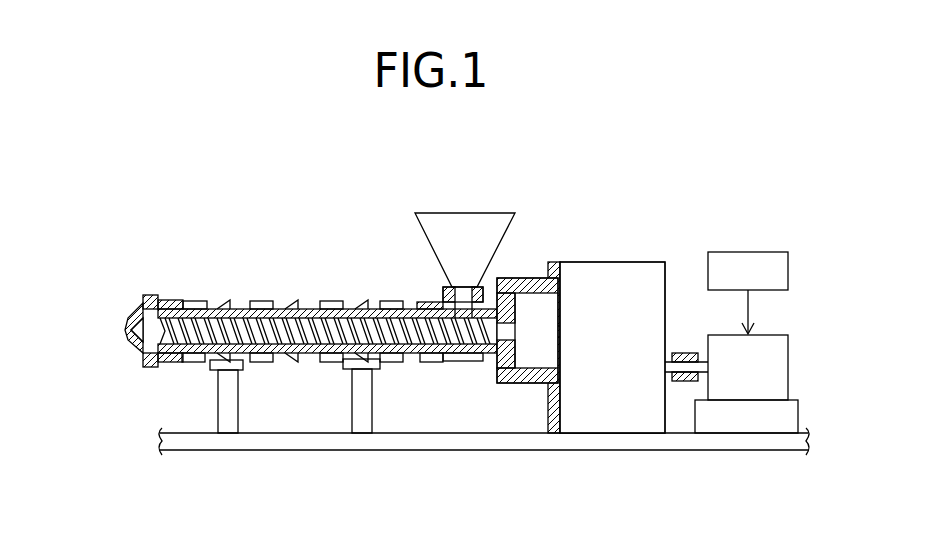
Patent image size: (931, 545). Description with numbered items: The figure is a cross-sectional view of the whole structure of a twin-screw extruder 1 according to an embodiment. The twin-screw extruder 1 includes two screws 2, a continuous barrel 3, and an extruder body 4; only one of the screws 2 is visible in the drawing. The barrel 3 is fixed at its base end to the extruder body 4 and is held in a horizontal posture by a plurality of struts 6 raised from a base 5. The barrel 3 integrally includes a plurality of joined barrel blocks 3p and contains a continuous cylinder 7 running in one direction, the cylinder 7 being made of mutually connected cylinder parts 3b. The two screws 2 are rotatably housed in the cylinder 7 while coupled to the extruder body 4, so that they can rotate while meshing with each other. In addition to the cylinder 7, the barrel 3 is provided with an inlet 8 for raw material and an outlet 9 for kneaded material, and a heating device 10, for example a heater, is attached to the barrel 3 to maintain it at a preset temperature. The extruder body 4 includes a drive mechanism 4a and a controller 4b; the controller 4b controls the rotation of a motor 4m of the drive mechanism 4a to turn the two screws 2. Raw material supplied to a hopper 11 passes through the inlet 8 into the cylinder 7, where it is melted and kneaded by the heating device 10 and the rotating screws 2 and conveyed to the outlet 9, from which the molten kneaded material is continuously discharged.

The twin-screw extruder 1 is at (602, 208).
The screws 2 is at (313, 308).
The barrel 3 is at (232, 302).
The cylinder parts 3b is at (268, 352).
The barrel blocks 3p is at (193, 357).
The extruder body 4 is at (677, 234).
The drive mechanism 4a is at (612, 262).
The controller 4b is at (745, 252).
The motor 4m is at (786, 335).
The base 5 is at (497, 450).
The struts 6 is at (227, 424).
The cylinder 7 is at (124, 323).
The inlet 8 is at (468, 300).
The outlet 9 is at (124, 331).
The heating device 10 is at (193, 299).
The hopper 11 is at (493, 233).